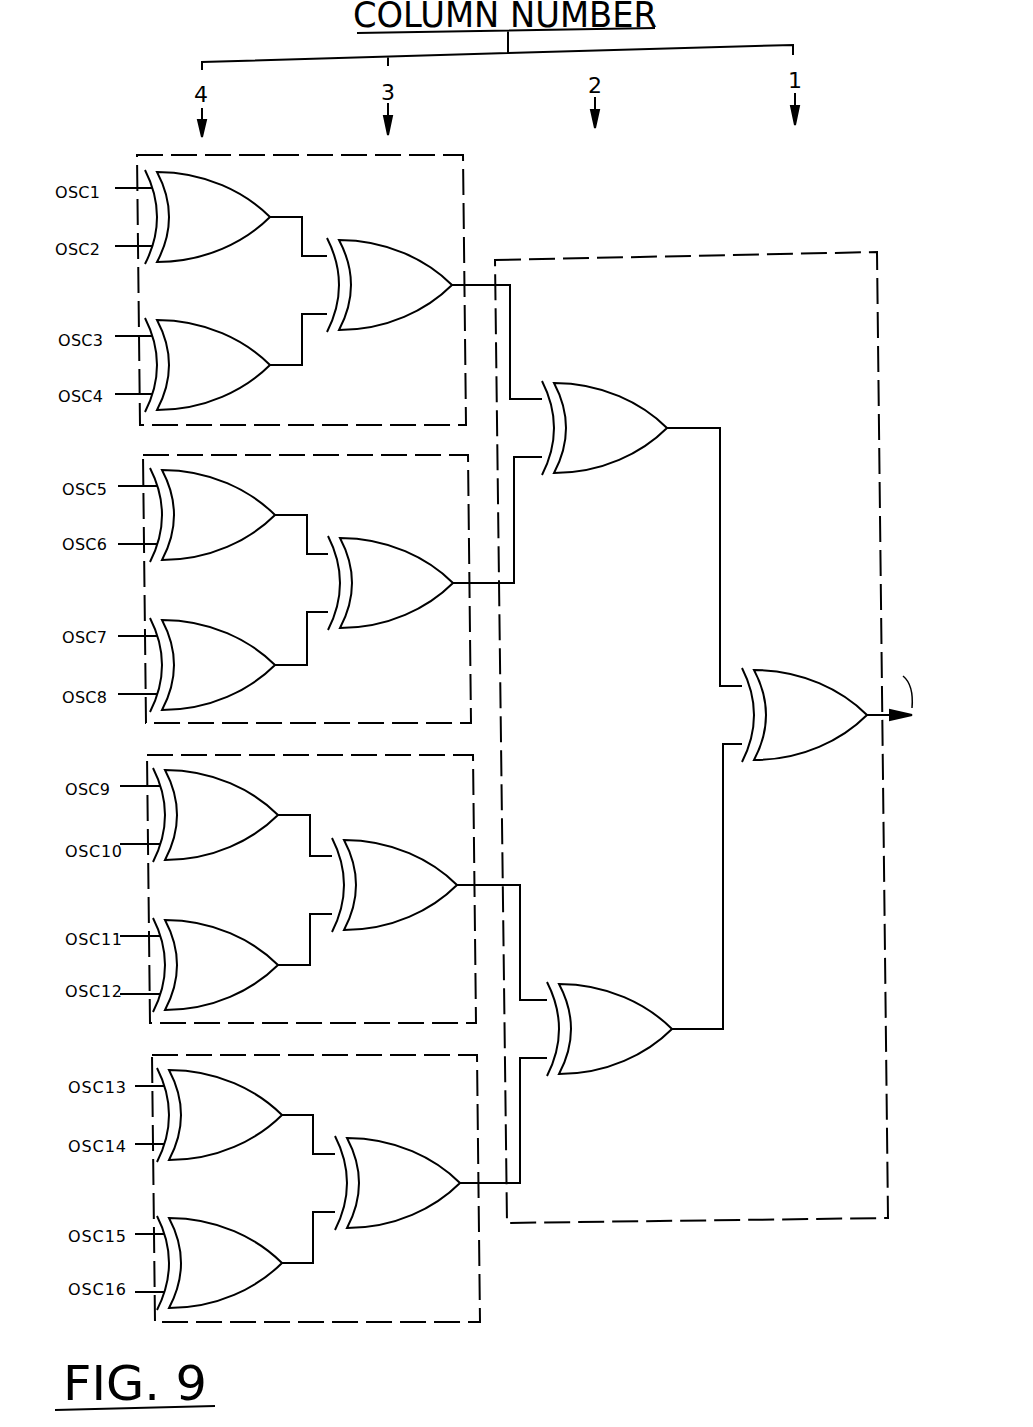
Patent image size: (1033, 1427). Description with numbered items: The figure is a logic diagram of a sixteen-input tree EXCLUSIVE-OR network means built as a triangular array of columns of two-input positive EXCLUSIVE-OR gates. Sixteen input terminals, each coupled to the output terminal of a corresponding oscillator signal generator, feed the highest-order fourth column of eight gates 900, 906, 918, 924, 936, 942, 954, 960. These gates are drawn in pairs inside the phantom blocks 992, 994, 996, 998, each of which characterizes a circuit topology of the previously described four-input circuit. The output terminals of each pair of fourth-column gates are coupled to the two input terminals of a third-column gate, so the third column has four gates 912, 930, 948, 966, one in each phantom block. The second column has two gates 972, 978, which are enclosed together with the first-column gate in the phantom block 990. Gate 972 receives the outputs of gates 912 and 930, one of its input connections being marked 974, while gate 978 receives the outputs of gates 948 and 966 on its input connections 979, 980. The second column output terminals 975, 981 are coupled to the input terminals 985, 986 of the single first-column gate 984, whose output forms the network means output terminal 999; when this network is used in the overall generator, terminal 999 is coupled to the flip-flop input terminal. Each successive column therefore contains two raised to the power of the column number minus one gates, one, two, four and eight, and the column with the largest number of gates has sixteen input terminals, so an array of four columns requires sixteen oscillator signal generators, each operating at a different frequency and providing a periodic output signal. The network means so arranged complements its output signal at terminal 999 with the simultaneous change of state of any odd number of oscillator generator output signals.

The two-input positive EXCLUSIVE-OR gate 900 is at (235, 192).
The two-input positive EXCLUSIVE-OR gate 906 is at (214, 328).
The two-input positive EXCLUSIVE-OR gate 912 is at (372, 240).
The two-input positive EXCLUSIVE-OR gate 918 is at (237, 481).
The two-input positive EXCLUSIVE-OR gate 924 is at (207, 620).
The two-input positive EXCLUSIVE-OR gate 930 is at (367, 538).
The two-input positive EXCLUSIVE-OR gate 936 is at (250, 789).
The two-input positive EXCLUSIVE-OR gate 942 is at (202, 923).
The two-input positive EXCLUSIVE-OR gate 948 is at (383, 838).
The two-input positive EXCLUSIVE-OR gate 954 is at (243, 1098).
The two-input positive EXCLUSIVE-OR gate 960 is at (212, 1222).
The two-input positive EXCLUSIVE-OR gate 966 is at (367, 1137).
The two-input positive EXCLUSIVE-OR gate 972 is at (612, 390).
The input line to exclusive-OR gate 972 974 is at (530, 467).
The second column output terminal 975 is at (668, 425).
The two-input positive EXCLUSIVE-OR gate 978 is at (617, 988).
The input line to exclusive-OR gate 978 979 is at (520, 970).
The input line to exclusive-OR gate 978 980 is at (520, 1090).
The second column output terminal 981 is at (725, 1022).
The two-input positive EXCLUSIVE-OR gate 984 is at (790, 758).
The first column input terminal 985 is at (717, 684).
The first column input terminal 986 is at (722, 755).
The phantom block 990 is at (868, 1165).
The phantom block 992 is at (438, 395).
The phantom block 994 is at (442, 688).
The phantom block 996 is at (445, 975).
The phantom block 998 is at (448, 1293).
The network means output terminal 999 is at (912, 722).